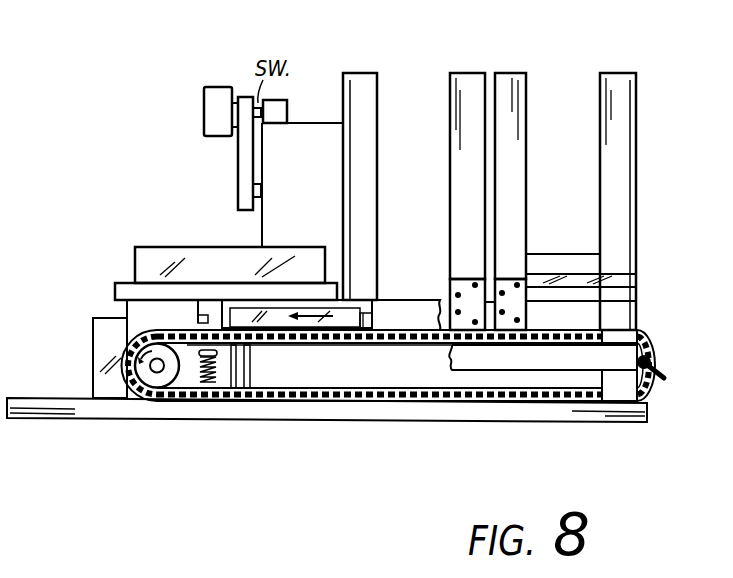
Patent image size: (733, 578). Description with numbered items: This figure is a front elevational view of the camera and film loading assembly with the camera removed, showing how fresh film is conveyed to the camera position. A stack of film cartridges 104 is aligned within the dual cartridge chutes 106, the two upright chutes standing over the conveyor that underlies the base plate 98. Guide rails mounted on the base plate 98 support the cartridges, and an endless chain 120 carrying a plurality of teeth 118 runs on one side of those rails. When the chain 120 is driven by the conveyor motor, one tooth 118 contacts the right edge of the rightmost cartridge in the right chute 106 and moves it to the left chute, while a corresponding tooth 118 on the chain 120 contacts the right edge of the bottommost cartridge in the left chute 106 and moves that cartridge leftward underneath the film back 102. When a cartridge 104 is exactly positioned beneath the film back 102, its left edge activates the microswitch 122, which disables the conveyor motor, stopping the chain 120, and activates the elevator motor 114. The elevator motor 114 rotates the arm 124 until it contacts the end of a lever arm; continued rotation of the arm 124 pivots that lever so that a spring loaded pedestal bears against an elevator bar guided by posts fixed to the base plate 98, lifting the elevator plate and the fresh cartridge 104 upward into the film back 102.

The base plate 98 is at (647, 413).
The film back 102 is at (135, 262).
The film cartridge 104 is at (587, 276).
The cartridge chute 106 is at (524, 40).
The elevator motor 114 is at (317, 138).
The tooth 118 is at (363, 325).
The chain 120 is at (577, 329).
The microswitch 122 is at (241, 318).
The arm 124 is at (238, 160).